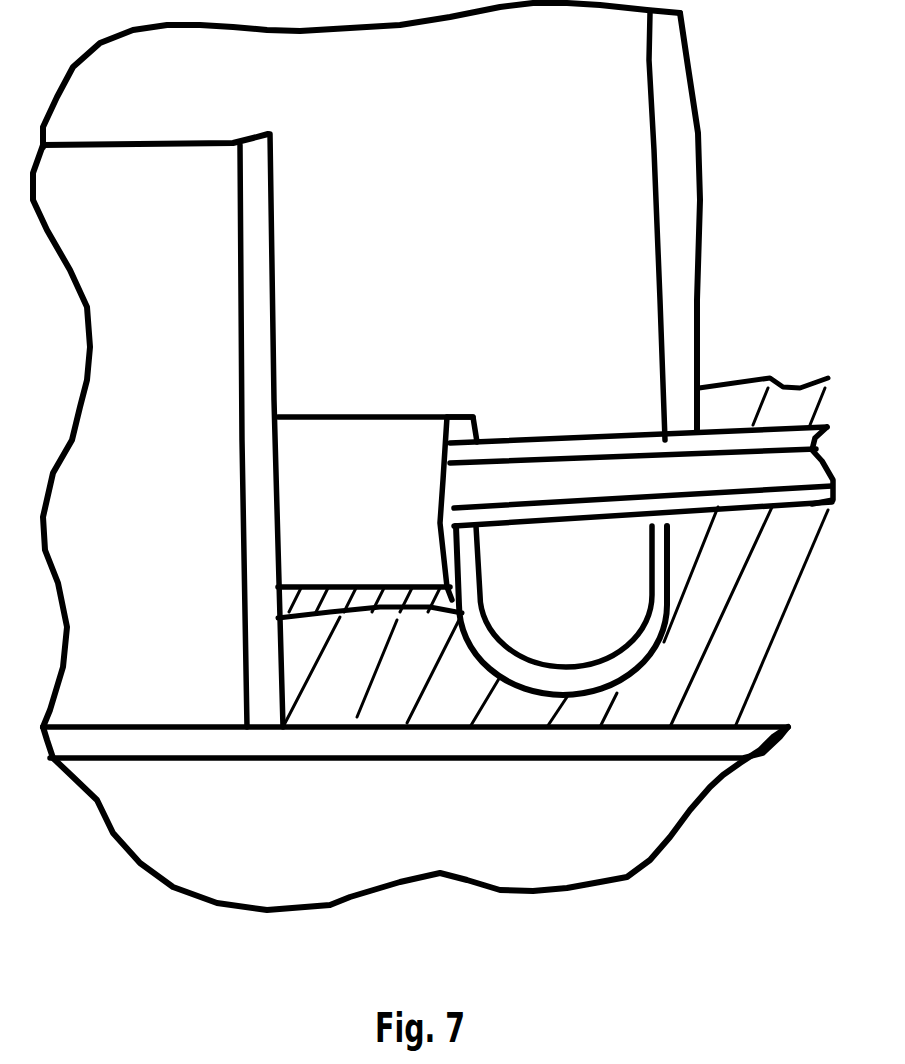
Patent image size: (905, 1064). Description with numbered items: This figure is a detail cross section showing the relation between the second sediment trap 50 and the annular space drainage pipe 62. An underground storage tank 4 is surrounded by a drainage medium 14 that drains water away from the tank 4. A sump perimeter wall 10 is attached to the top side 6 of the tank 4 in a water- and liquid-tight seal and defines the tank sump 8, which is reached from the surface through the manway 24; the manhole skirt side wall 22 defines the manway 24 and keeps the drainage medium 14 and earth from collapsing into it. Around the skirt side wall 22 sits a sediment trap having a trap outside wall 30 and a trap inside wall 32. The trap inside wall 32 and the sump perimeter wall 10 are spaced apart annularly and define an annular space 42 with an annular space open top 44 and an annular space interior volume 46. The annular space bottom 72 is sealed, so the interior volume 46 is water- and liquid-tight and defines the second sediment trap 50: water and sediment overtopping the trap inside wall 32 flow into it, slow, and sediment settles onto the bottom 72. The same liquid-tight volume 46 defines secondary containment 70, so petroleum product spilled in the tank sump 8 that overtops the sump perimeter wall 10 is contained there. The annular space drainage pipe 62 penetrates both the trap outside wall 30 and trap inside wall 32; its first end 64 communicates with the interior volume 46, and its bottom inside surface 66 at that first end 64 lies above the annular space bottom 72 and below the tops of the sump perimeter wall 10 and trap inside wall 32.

The underground storage tank 4 is at (207, 815).
The top side of tank 6 is at (493, 727).
The tank sump 8 is at (145, 383).
The sump perimeter wall 10 is at (240, 335).
The drainage medium 14 is at (633, 692).
The manhole skirt side wall 22 is at (700, 127).
The manway 24 is at (430, 191).
The trap outside wall 30 is at (665, 575).
The trap inside wall 32 is at (463, 553).
The annular space 42 is at (380, 523).
The annular space open top 44 is at (310, 418).
The annular space interior volume 46 is at (347, 477).
The second sediment trap 50 is at (412, 517).
The annular space drainage pipe 62 is at (600, 435).
The first end of annular space drainage pipe 64 is at (480, 440).
The bottom inside surface 66 is at (460, 510).
The secondary containment 70 is at (327, 545).
The annular space bottom 72 is at (313, 617).